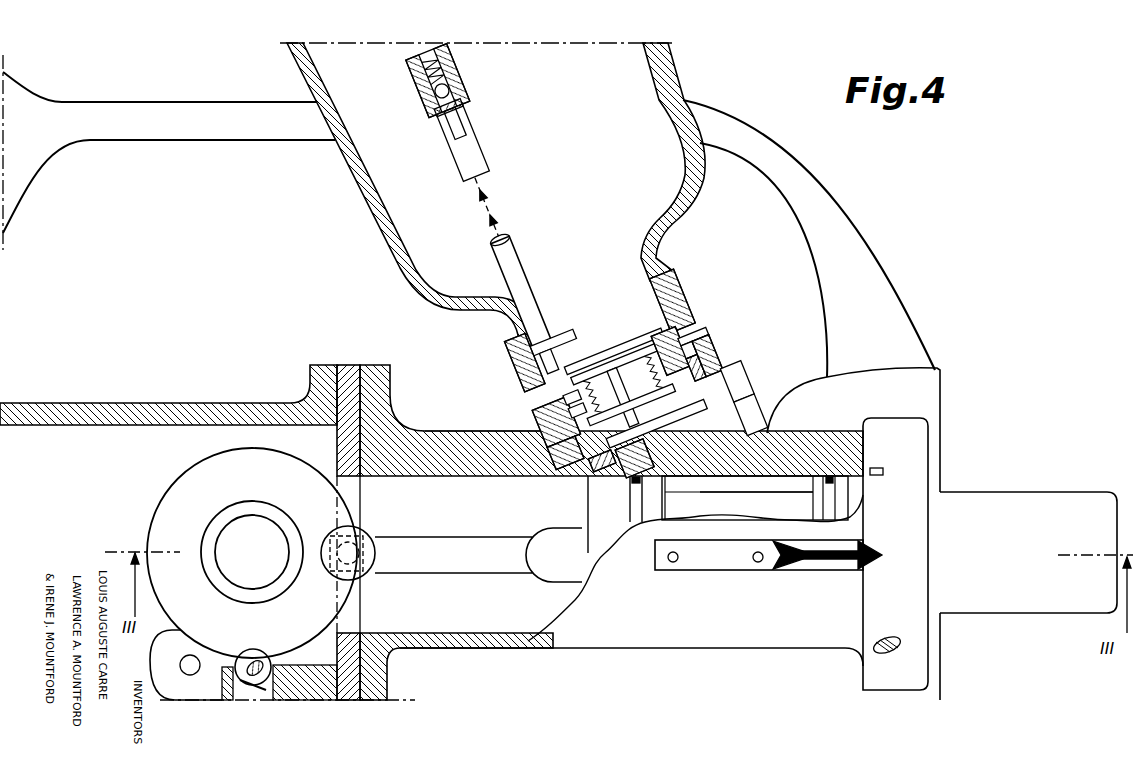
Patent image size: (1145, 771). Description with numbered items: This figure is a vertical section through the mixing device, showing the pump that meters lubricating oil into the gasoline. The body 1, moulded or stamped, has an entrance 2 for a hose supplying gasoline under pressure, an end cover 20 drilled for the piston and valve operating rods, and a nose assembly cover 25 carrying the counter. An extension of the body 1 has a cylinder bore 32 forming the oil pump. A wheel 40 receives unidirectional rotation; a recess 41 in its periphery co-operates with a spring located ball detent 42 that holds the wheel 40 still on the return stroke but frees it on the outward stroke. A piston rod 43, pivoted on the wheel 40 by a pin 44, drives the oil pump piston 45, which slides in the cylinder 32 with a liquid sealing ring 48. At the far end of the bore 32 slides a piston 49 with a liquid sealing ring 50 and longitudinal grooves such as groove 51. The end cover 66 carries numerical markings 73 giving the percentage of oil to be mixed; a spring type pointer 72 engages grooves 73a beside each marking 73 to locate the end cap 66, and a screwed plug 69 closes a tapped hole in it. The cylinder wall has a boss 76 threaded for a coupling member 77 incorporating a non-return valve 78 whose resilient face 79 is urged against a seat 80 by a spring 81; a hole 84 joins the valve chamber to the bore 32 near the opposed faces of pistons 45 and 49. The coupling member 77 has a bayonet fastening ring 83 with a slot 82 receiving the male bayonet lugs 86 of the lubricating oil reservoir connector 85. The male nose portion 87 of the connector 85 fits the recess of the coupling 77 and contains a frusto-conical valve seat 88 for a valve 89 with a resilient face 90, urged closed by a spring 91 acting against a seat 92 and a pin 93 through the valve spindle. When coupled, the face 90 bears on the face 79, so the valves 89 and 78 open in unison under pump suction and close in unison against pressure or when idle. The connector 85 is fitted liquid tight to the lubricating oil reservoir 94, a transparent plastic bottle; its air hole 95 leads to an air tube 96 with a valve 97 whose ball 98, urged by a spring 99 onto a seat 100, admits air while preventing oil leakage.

The body 1 is at (878, 375).
The entrance 2 is at (940, 420).
The end cover 20 is at (348, 363).
The nose assembly cover 25 is at (207, 403).
The cylinder bore 32 is at (458, 508).
The wheel 40 is at (207, 482).
The recess 41 is at (248, 653).
The spring located ball detent 42 is at (263, 657).
The piston rod 43 is at (442, 567).
The pin 44 is at (326, 570).
The oil pump piston 45 is at (598, 558).
The liquid sealing ring 48 is at (635, 482).
The piston 49 is at (725, 552).
The liquid sealing ring 50 is at (827, 487).
The longitudinal groove 51 is at (748, 477).
The end cover 66 is at (1040, 500).
The screwed plug 69 is at (900, 645).
The pointer 72 is at (825, 562).
The numerical markings 73 is at (907, 540).
The grooves 73a is at (872, 468).
The boss 76 is at (737, 377).
The coupling member 77 is at (713, 355).
The non-return valve 78 is at (687, 418).
The resilient face 79 is at (720, 388).
The seat 80 is at (595, 465).
The spring 81 is at (635, 476).
The slot 82 is at (555, 413).
The bayonet type fastening ring 83 is at (705, 335).
The hole 84 is at (677, 480).
The lubricating oil reservoir connector 85 is at (667, 275).
The male bayonet lugs 86 is at (575, 410).
The male nose portion 87 is at (560, 462).
The frusto-conical valve seat 88 is at (575, 397).
The valve 89 is at (623, 367).
The resilient face 90 is at (713, 342).
The spring 91 is at (660, 367).
The seat 92 is at (700, 363).
The pin 93 is at (597, 357).
The lubricating oil reservoir 94 is at (675, 75).
The air hole 95 is at (527, 385).
The air tube 96 is at (524, 255).
The valve 97 is at (478, 106).
The ball 98 is at (452, 82).
The spring 99 is at (435, 93).
The seat 100 is at (440, 113).